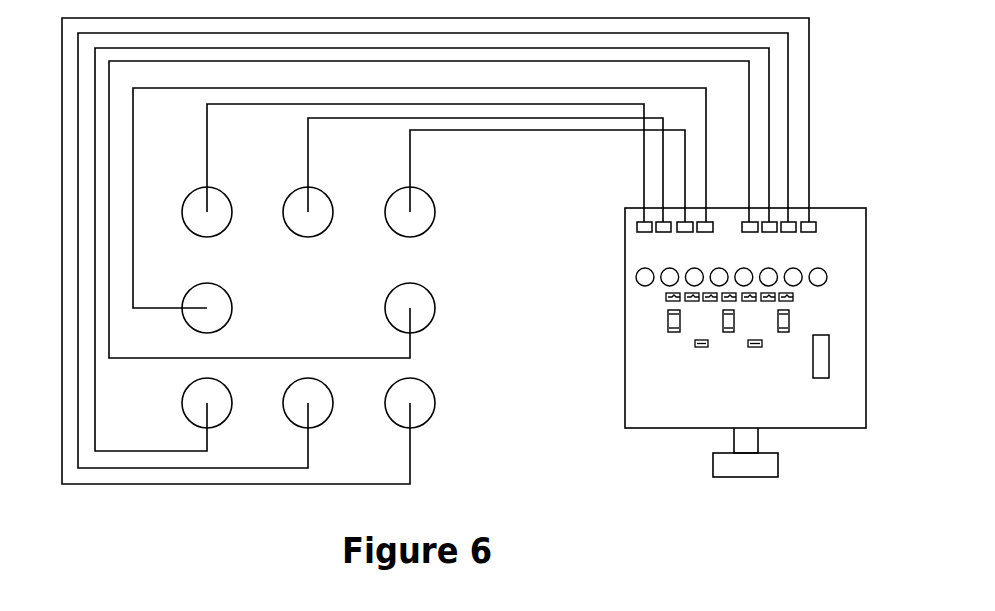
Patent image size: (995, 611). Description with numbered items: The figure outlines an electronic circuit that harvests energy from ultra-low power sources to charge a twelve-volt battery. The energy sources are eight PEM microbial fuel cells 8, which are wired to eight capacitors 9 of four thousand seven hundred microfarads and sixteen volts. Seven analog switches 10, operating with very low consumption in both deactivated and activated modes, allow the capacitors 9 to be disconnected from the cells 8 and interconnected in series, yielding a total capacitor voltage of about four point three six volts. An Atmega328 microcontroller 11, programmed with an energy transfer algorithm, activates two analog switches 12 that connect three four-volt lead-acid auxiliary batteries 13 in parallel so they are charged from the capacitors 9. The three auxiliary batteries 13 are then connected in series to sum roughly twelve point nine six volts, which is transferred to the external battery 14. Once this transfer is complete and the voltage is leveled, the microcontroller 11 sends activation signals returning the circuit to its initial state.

The PEM microbial fuel cells 8 is at (308, 307).
The capacitors 9 is at (741, 275).
The analog switches NX3L2467 10 is at (747, 296).
The Atmega328 microcontroller 11 is at (838, 356).
The analog switches ADG1634 12 is at (728, 357).
The lead-acid auxiliary batteries 13 is at (728, 321).
The external battery 14 is at (764, 452).